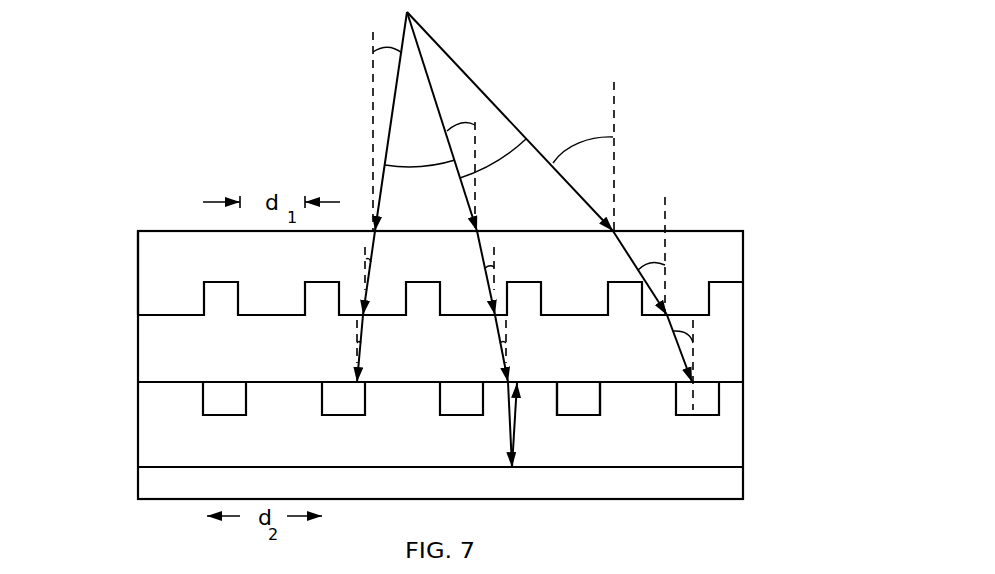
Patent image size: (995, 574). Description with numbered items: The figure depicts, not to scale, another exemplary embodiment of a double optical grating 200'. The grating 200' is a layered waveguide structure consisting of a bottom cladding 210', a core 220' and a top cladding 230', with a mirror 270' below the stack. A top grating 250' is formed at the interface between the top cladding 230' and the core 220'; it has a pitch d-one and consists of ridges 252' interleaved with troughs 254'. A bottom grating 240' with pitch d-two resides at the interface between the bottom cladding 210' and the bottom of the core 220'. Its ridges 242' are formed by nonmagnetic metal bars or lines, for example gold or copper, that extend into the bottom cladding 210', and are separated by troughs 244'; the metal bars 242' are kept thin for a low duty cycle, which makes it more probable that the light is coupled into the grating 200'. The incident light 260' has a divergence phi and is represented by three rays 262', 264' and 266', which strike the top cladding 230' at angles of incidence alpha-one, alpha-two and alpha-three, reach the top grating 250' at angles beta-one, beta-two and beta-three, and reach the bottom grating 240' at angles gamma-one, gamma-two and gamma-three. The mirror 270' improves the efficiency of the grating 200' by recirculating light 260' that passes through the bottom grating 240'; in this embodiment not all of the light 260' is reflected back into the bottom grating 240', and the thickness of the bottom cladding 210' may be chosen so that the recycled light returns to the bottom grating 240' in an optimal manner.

The double optical grating 200' is at (395, 258).
The bottom cladding 210' is at (486, 436).
The core 220' is at (486, 356).
The top cladding 230' is at (452, 209).
The bottom grating 240' is at (396, 414).
The ridges 242' is at (527, 457).
The troughs 244' is at (670, 457).
The top grating 250' is at (185, 296).
The ridges 252' is at (412, 276).
The troughs 254' is at (755, 271).
The light 260' is at (486, 211).
The ray 262' is at (474, 197).
The ray 264' is at (566, 211).
The ray 266' is at (355, 197).
The mirror 270' is at (411, 510).